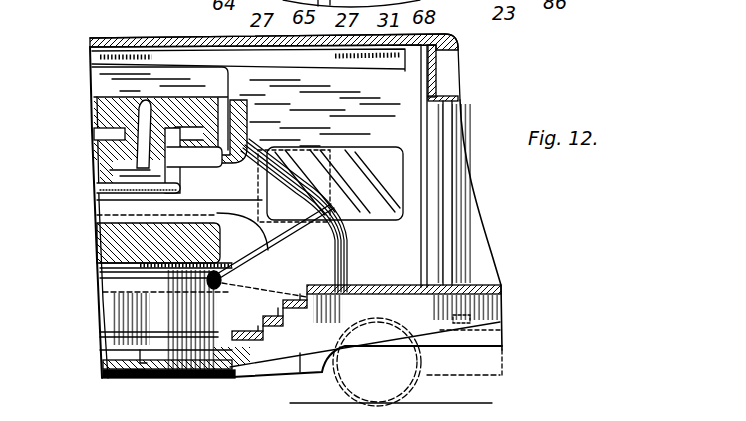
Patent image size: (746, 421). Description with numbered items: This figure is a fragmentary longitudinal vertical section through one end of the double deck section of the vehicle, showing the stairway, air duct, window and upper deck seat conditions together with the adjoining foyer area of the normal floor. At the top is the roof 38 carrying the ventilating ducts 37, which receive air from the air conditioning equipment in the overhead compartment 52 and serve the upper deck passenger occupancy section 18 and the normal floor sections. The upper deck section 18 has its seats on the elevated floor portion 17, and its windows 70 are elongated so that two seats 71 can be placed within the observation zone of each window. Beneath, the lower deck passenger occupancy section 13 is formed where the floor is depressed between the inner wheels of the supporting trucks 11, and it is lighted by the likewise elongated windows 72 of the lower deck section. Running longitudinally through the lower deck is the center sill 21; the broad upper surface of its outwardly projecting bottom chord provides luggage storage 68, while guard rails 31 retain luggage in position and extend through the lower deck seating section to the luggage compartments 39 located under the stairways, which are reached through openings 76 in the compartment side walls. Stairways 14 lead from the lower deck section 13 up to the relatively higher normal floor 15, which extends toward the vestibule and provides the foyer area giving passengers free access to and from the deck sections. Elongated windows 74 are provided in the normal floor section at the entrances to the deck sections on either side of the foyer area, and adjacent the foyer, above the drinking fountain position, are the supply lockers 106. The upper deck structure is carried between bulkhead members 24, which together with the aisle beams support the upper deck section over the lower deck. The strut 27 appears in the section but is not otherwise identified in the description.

The roof 38 is at (129, 37).
The ventilating ducts 37 is at (90, 60).
The upper deck passenger occupancy section 18 is at (100, 85).
The windows of the upper deck section 70 is at (112, 116).
The seats 71 is at (98, 158).
The elevated floor portion 17 is at (100, 180).
The windows in the lower deck section 72 is at (100, 243).
The guard rails 31 is at (105, 265).
The center sill 21 is at (112, 308).
The lower deck passenger occupancy section 13 is at (120, 362).
The luggage storage 68 is at (137, 373).
The stairways 14 is at (220, 372).
The strut 27 is at (287, 350).
The luggage compartments 39 is at (270, 250).
The openings 76 is at (249, 213).
The bulkhead members 24 is at (320, 113).
The elongated windows 74 is at (385, 187).
The supply lockers 106 is at (435, 147).
The overhead compartment 52 is at (448, 90).
The normal floor 15 is at (505, 292).
The supporting trucks 11 is at (487, 357).